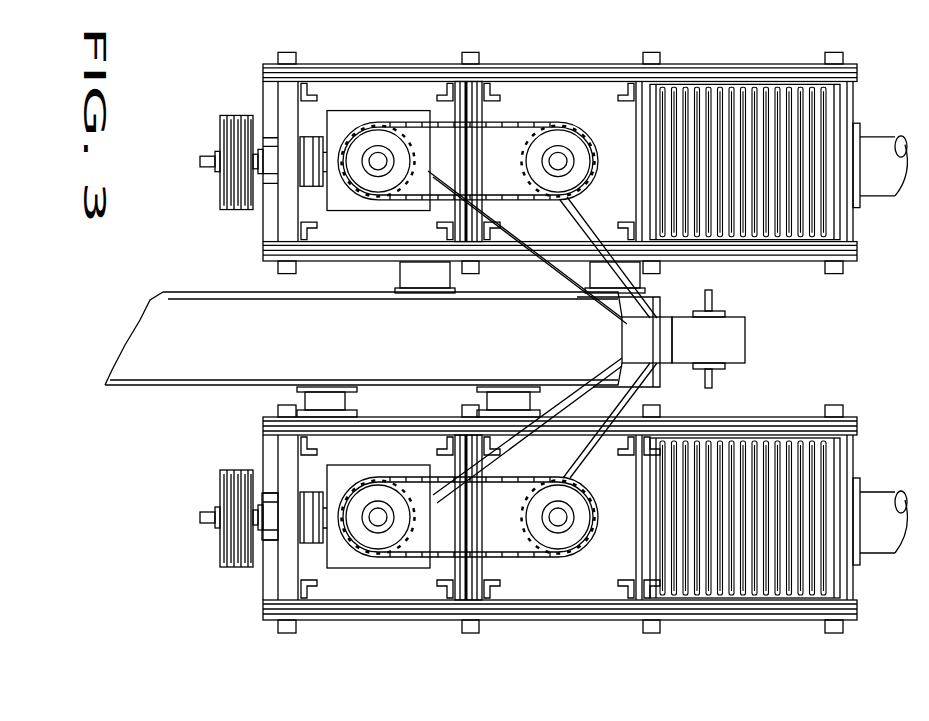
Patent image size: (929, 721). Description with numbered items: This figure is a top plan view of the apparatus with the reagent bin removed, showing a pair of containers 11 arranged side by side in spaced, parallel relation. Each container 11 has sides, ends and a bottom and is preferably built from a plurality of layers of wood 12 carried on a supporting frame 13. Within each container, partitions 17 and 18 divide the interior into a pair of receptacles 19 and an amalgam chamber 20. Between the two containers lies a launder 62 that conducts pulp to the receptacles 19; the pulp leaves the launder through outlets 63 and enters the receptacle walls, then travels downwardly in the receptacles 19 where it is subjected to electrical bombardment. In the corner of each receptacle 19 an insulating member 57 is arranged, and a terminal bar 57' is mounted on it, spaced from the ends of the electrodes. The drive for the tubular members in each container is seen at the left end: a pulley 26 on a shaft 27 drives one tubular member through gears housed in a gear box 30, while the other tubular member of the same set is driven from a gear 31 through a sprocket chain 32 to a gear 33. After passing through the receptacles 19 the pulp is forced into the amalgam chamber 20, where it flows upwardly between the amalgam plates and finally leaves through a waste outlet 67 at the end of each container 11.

The container 11 is at (759, 625).
The layers of wood 12 is at (577, 617).
The supporting frame 13 is at (464, 633).
The partition 17 is at (648, 590).
The partition 18 is at (473, 595).
The receptacle 19 is at (423, 590).
The amalgam chamber 20 is at (790, 598).
The pulley 26 is at (222, 568).
The shaft 27 is at (200, 518).
The gear box 30 is at (357, 568).
The gear 31 is at (381, 543).
The sprocket chain 32 is at (527, 560).
The gear 33 is at (557, 547).
The insulating member 57 is at (313, 579).
The terminal bar 57' is at (300, 581).
The launder 62 is at (172, 368).
The outlet 63 is at (412, 296).
The waste outlet 67 is at (873, 540).